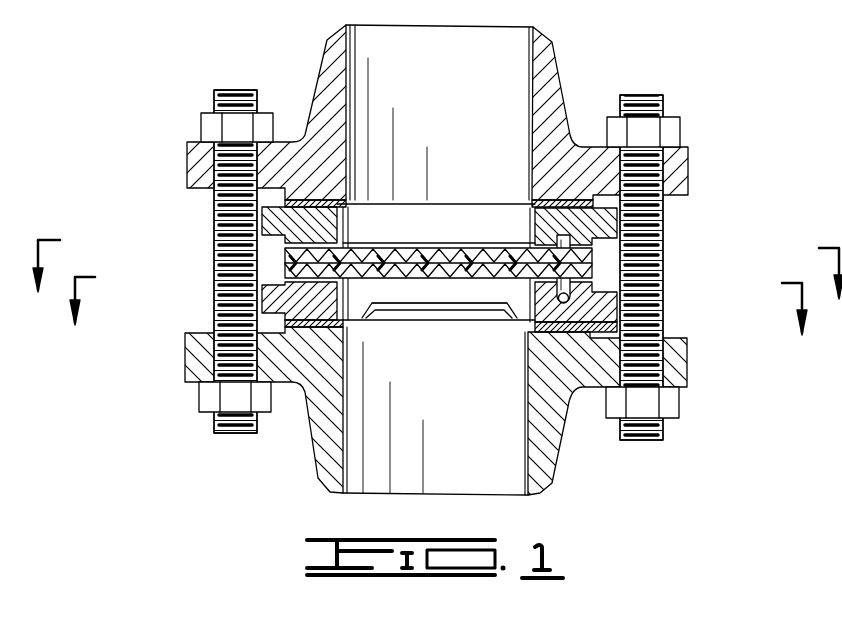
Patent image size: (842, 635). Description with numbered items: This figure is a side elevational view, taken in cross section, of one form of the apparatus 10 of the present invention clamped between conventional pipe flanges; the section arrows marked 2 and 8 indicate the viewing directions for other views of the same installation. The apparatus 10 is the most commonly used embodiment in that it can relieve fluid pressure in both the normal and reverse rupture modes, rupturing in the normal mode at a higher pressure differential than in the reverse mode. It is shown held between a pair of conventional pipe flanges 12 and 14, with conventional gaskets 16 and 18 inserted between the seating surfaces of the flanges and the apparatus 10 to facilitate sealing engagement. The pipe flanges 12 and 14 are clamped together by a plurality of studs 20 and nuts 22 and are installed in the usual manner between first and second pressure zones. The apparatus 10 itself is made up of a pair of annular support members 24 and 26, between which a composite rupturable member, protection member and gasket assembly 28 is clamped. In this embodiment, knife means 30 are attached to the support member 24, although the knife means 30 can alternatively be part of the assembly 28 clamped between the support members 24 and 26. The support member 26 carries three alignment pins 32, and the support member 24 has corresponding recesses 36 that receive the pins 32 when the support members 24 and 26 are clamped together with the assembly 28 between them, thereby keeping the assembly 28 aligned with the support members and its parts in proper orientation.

The apparatus 10 is at (485, 286).
The pipe flange 12 is at (540, 453).
The pipe flange 14 is at (547, 83).
The gasket 16 is at (595, 204).
The gasket 18 is at (592, 333).
The stud 20 is at (232, 214).
The nut 22 is at (208, 127).
The annular support member 24 is at (322, 298).
The annular support member 26 is at (322, 223).
The composite rupturable member, protection member and gasket assembly 28 is at (478, 247).
The knife means 30 is at (466, 315).
The alignment pin 32 is at (562, 245).
The recess 36 is at (556, 302).
The section line for FIG. 2 is at (436, 286).
The section line for FIG. 8 is at (436, 323).